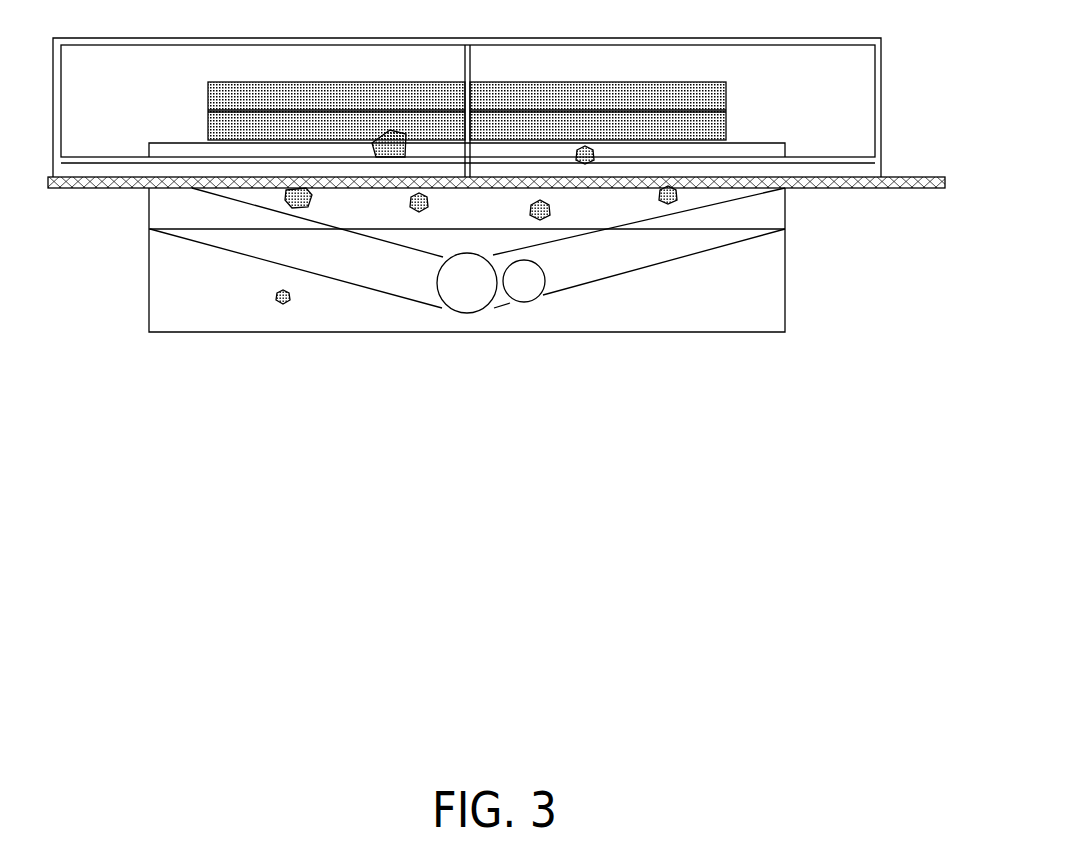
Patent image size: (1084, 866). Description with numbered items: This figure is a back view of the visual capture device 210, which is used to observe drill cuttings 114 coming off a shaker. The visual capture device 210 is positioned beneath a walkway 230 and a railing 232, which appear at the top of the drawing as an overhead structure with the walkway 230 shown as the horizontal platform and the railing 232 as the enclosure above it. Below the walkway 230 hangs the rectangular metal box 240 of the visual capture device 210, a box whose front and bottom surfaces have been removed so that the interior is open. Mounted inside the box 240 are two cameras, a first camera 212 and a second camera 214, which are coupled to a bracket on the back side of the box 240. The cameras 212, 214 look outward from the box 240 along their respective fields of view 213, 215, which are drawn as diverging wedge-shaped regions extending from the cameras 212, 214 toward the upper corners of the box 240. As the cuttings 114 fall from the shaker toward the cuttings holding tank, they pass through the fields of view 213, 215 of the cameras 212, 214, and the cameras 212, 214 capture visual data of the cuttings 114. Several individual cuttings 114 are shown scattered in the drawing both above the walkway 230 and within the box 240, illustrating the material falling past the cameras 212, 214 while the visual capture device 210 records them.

The cuttings 114 is at (268, 351).
The visual capture device 210 is at (414, 326).
The camera 212 is at (463, 287).
The camera 214 is at (525, 282).
The field of view 213 is at (352, 265).
The field of view 215 is at (612, 265).
The walkway 230 is at (910, 176).
The railing 232 is at (882, 67).
The rectangular metal box 240 is at (150, 302).